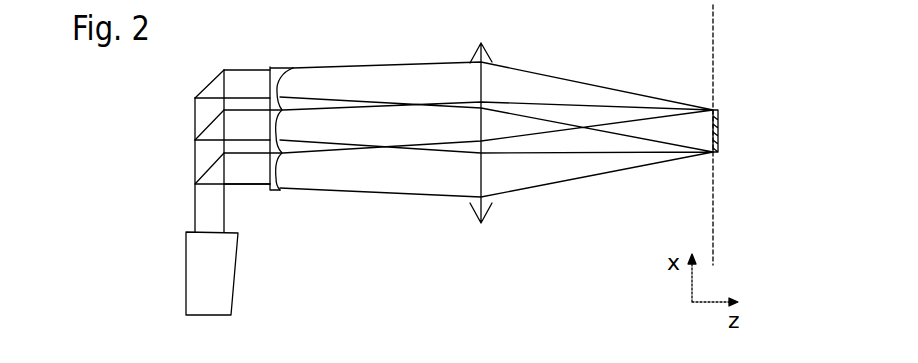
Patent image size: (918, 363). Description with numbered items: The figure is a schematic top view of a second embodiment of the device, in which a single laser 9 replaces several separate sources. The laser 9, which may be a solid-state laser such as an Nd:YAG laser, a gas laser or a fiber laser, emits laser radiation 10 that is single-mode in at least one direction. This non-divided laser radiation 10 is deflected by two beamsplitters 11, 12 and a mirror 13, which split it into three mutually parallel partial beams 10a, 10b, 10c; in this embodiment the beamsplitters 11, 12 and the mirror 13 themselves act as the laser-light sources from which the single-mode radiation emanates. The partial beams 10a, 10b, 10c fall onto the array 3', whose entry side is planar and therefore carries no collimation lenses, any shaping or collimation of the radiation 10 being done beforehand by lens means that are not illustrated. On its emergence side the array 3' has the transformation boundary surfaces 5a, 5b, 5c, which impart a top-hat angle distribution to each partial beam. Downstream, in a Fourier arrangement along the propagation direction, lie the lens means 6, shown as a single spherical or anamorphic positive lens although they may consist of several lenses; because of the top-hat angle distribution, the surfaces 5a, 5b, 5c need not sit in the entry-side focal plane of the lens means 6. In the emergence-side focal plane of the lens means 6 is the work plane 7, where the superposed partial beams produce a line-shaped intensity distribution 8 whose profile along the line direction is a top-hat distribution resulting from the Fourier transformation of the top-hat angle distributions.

The array 3' is at (274, 95).
The transformation boundary surface 5a is at (278, 83).
The transformation boundary surface 5b is at (278, 128).
The transformation boundary surface 5c is at (277, 172).
The lens means 6 is at (483, 43).
The work plane 7 is at (713, 42).
The line-shaped intensity distribution 8 is at (718, 130).
The laser 9 is at (231, 300).
The laser radiation 10 is at (210, 206).
The partial beam 10a is at (250, 78).
The partial beam 10b is at (245, 131).
The partial beam 10c is at (250, 172).
The beamsplitter 11 is at (220, 158).
The beamsplitter 12 is at (190, 146).
The mirror 13 is at (200, 93).